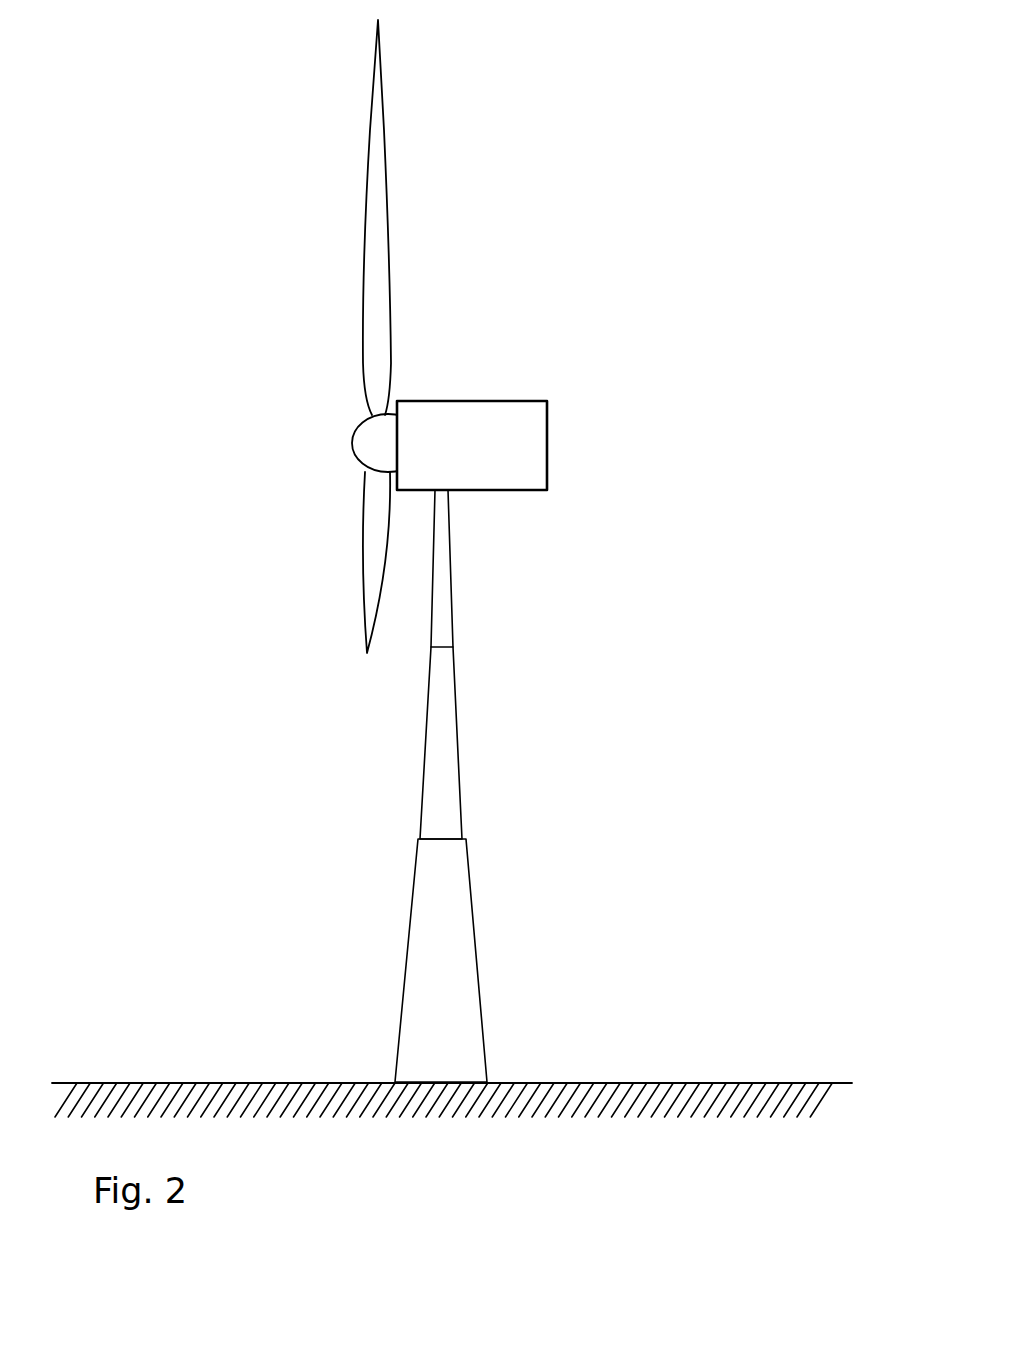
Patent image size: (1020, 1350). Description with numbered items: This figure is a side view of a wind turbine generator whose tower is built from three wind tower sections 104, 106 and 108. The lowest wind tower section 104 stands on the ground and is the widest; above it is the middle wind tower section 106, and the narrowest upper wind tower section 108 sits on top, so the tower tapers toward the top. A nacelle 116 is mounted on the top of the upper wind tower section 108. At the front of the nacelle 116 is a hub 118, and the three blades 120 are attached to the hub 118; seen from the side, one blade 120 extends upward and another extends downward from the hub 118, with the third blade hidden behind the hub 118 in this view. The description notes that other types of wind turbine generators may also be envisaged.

The wind tower section 104 is at (433, 980).
The wind tower section 106 is at (445, 711).
The wind tower section 108 is at (446, 620).
The nacelle 116 is at (483, 398).
The hub 118 is at (379, 452).
The blade 120 is at (378, 308).